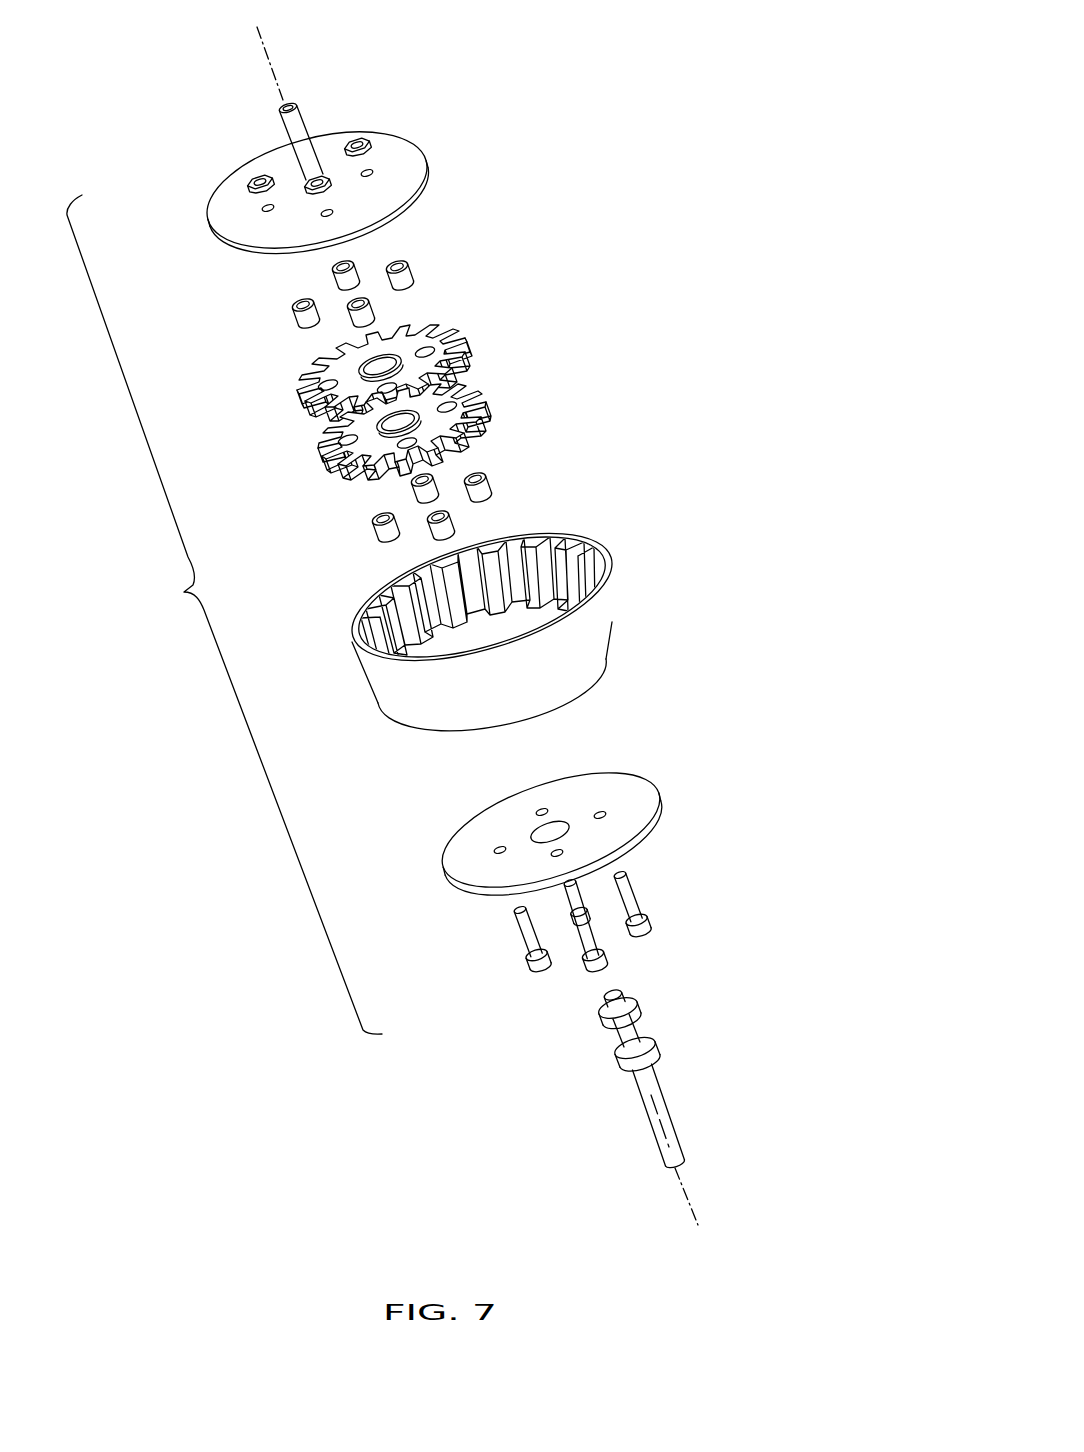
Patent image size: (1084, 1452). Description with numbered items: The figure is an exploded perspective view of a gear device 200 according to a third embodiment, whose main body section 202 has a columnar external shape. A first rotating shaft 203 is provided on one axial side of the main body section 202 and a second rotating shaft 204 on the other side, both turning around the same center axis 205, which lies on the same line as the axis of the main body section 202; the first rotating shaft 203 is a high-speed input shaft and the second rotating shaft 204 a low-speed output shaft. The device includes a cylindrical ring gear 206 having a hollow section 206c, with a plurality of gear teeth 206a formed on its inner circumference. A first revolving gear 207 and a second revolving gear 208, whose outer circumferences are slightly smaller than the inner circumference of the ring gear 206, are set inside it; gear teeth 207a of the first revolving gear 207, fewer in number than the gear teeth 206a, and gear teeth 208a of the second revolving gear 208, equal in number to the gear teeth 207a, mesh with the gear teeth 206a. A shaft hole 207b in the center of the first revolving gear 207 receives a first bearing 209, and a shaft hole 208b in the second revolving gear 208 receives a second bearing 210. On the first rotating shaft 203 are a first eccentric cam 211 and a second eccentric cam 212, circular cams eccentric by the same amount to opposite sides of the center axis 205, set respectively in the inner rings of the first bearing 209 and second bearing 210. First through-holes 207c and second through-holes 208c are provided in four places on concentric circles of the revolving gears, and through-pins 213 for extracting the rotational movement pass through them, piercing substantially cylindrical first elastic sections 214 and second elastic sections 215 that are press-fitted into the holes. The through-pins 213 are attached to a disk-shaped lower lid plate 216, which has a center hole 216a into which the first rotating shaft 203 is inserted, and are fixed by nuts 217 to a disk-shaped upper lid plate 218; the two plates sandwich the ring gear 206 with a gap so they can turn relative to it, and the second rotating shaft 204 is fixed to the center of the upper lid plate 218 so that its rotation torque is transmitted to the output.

The gear device 200 is at (634, 182).
The main body section 202 is at (224, 614).
The first rotating shaft 203 is at (683, 1125).
The second rotating shaft 204 is at (283, 125).
The center axis 205 is at (285, 78).
The ring gear 206 is at (358, 676).
The gear teeth 206a is at (532, 565).
The hollow section 206c is at (368, 615).
The first revolving gear 207 is at (470, 380).
The gear teeth 207a is at (404, 441).
The shaft hole 207b is at (398, 422).
The first through-holes 207c is at (338, 478).
The second revolving gear 208 is at (455, 327).
The gear teeth 208a is at (384, 379).
The shaft hole 208b is at (380, 366).
The second through-holes 208c is at (360, 350).
The first bearing 209 is at (478, 420).
The second bearing 210 is at (300, 394).
The first eccentric cam 211 is at (657, 1046).
The second eccentric cam 212 is at (642, 1005).
The through-pins 213 is at (585, 962).
The first elastic sections 214 is at (434, 486).
The second elastic sections 215 is at (372, 308).
The lower lid plate 216 is at (658, 790).
The center hole 216a is at (570, 832).
The nuts 217 is at (316, 193).
The upper lid plate 218 is at (430, 152).